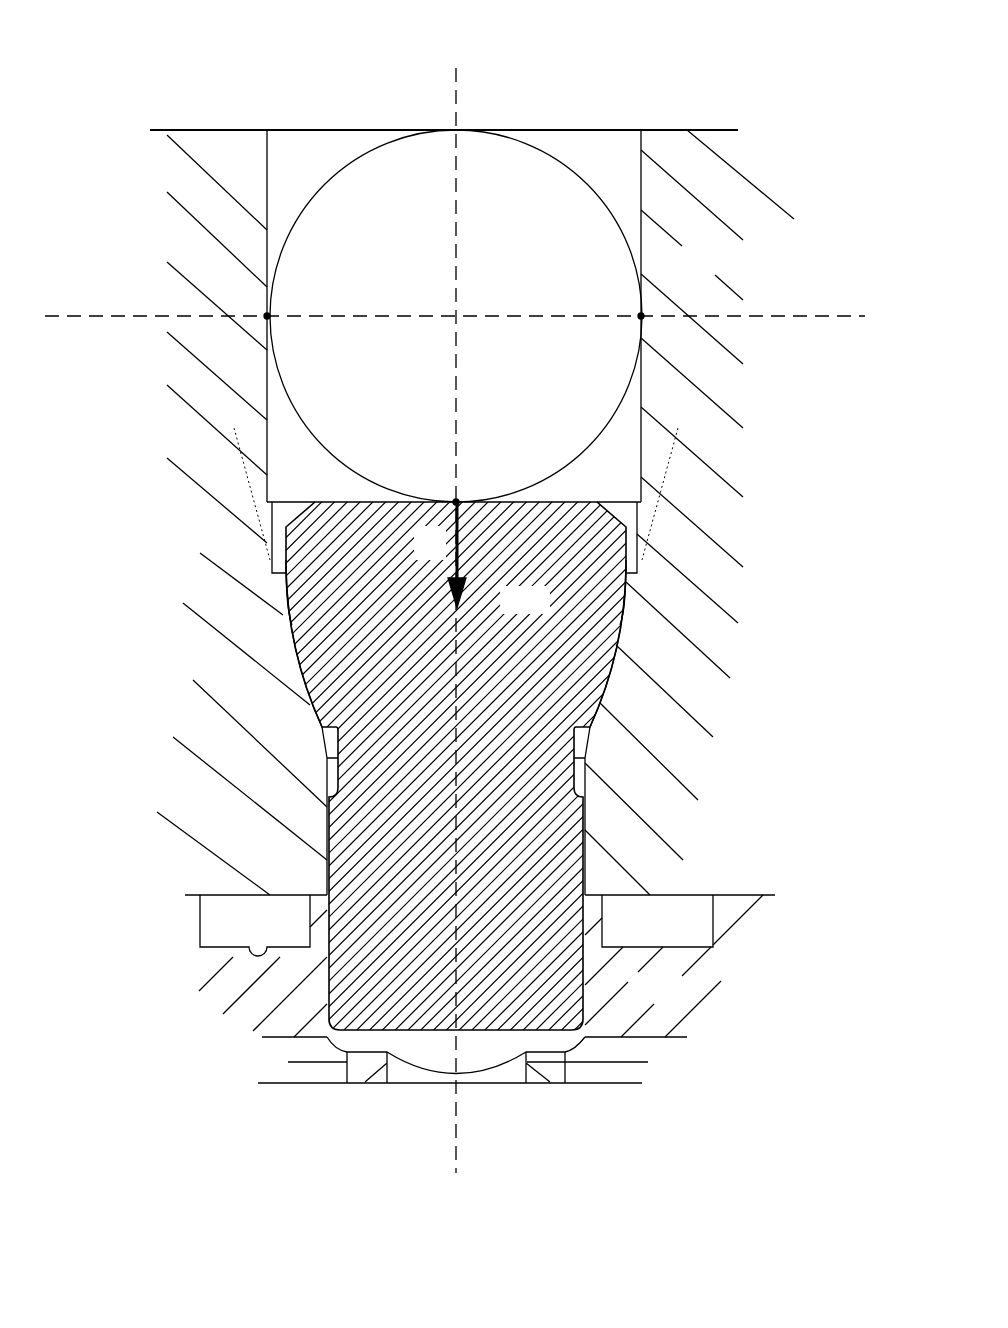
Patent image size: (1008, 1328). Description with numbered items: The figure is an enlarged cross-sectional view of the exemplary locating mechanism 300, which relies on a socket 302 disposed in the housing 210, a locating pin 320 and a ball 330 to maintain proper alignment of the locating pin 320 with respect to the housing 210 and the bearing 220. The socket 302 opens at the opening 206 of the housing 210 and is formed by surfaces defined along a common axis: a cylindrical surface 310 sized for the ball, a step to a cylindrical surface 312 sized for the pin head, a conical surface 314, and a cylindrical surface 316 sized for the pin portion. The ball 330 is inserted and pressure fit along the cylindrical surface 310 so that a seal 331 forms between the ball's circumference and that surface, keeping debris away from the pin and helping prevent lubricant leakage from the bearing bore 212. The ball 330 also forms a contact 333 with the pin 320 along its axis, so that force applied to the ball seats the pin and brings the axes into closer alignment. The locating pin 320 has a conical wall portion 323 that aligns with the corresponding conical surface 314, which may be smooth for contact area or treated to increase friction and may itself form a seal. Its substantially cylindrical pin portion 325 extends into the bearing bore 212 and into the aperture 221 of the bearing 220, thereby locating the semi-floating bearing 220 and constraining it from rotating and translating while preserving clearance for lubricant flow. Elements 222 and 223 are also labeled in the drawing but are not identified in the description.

The locating mechanism 300 is at (652, 40).
The opening of the housing 206 is at (296, 110).
The socket 302 is at (586, 120).
The housing 210 is at (735, 276).
The cylindrical surface 310 is at (268, 188).
The ball 330 is at (550, 271).
The seal 331 is at (640, 318).
The contact 333 is at (455, 498).
The cylindrical surface 312 is at (276, 544).
The locating pin 320 is at (545, 612).
The conical wall portion 323 is at (287, 611).
The conical surface 314 is at (306, 666).
The cylindrical surface 316 is at (327, 838).
The bearing bore 212 is at (228, 893).
The aperture 221 is at (327, 910).
The pin portion 325 is at (586, 908).
The bearing 220 is at (675, 1002).
The base plate 222 is at (595, 1122).
The spring washer 223 is at (341, 1047).